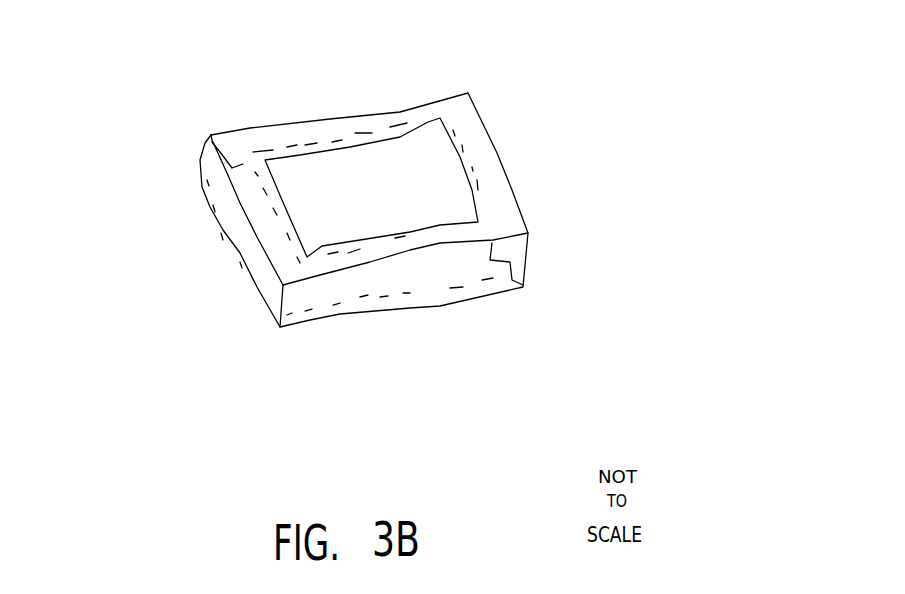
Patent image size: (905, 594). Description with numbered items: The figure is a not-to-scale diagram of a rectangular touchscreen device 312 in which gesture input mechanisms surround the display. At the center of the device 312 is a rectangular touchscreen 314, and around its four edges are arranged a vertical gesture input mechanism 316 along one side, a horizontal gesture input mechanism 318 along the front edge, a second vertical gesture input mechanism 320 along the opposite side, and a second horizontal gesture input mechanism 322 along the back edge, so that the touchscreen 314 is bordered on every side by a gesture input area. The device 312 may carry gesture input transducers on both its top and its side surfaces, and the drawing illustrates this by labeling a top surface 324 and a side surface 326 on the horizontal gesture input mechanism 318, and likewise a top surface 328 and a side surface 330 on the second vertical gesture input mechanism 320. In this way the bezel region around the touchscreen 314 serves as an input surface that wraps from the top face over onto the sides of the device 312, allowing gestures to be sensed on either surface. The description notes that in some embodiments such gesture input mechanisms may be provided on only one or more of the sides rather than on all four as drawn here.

The touchscreen device 312 is at (420, 254).
The touchscreen 314 is at (508, 187).
The vertical gesture input mechanism 316 is at (622, 198).
The horizontal gesture input mechanism 318 is at (542, 332).
The second vertical gesture input mechanism 320 is at (171, 166).
The second horizontal gesture input mechanism 322 is at (517, 88).
The top surface 324 is at (372, 266).
The side surface 326 is at (539, 358).
The top surface 328 is at (173, 210).
The side surface 330 is at (178, 243).